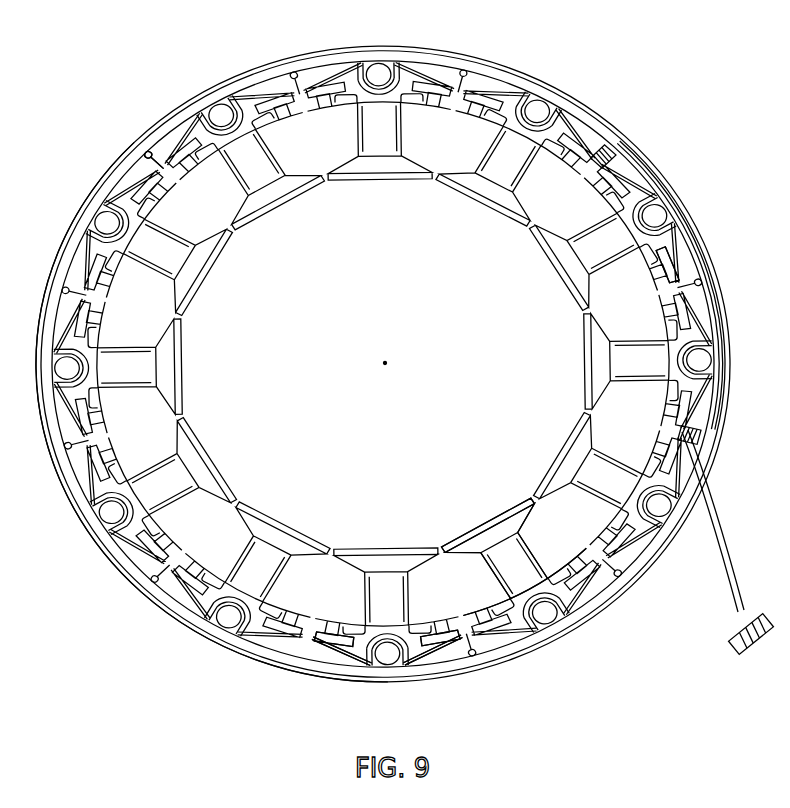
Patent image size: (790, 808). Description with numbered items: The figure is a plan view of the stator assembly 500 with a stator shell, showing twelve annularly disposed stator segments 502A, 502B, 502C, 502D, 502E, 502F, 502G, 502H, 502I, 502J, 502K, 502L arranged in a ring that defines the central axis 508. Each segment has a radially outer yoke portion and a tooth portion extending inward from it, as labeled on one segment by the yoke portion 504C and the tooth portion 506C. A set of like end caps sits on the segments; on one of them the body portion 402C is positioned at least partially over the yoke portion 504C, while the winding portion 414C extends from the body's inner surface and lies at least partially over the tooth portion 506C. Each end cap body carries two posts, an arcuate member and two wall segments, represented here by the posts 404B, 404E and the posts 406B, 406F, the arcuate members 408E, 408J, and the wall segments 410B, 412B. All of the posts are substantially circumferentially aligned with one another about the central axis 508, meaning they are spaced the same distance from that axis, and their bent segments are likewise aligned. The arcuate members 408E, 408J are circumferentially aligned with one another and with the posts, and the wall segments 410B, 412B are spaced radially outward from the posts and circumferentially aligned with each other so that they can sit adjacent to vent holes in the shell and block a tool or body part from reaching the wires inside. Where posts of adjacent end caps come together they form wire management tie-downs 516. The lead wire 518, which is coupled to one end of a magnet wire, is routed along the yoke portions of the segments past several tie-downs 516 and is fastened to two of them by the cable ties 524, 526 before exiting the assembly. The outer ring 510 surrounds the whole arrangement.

The stator assembly 500 is at (117, 603).
The stator segment 502A is at (298, 530).
The stator segment 502B is at (393, 548).
The stator segment 502C is at (465, 532).
The stator segment 502D is at (550, 458).
The stator segment 502E is at (585, 355).
The stator segment 502F is at (562, 275).
The stator segment 502G is at (483, 203).
The stator segment 502H is at (387, 182).
The stator segment 502I is at (277, 210).
The stator segment 502J is at (210, 270).
The stator segment 502K is at (183, 380).
The stator segment 502L is at (208, 457).
The yoke portion 504C is at (556, 626).
The tooth portion 506C is at (531, 557).
The central axis 508 is at (385, 363).
The outer ring 510 is at (58, 474).
The wire management tie-down 516 is at (463, 85).
The lead wire 518 is at (719, 571).
The cable tie 524 is at (710, 470).
The cable tie 526 is at (612, 142).
The body portion 402C is at (588, 594).
The post 404B is at (424, 664).
The post 404E is at (698, 284).
The post 406B is at (317, 639).
The post 406F is at (684, 253).
The arcuate member 408E is at (702, 352).
The arcuate member 408J is at (95, 220).
The wall segment 410B is at (418, 666).
The wall segment 412B is at (353, 663).
The winding portion 414C is at (507, 557).